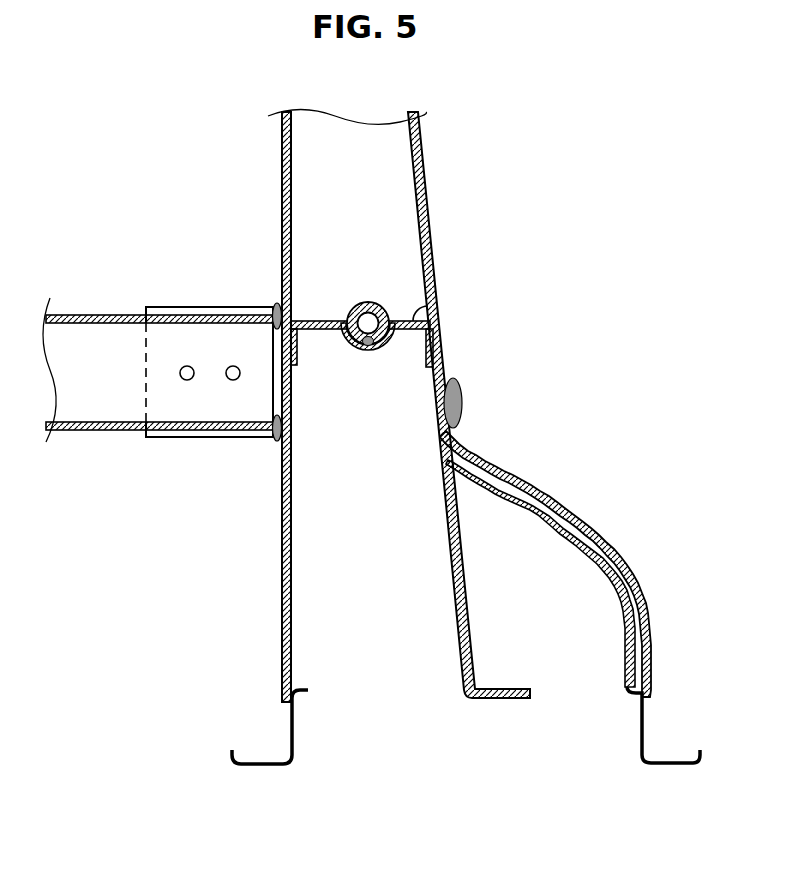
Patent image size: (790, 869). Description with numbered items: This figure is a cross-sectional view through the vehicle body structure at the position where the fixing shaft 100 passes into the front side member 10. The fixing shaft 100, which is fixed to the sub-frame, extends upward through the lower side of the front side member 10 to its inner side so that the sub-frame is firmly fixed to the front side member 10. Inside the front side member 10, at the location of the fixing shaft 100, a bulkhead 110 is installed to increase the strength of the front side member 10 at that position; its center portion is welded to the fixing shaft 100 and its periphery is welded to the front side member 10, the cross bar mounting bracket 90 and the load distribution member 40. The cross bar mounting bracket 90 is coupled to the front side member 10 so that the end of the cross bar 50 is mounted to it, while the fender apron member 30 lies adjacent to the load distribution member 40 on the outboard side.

The front side member 10 is at (427, 223).
The fender apron member 30 is at (624, 650).
The load distribution member 40 is at (597, 531).
The cross bar 50 is at (104, 432).
The cross bar mounting bracket 90 is at (207, 438).
The fixing shaft 100 is at (355, 308).
The bulkhead 110 is at (418, 319).